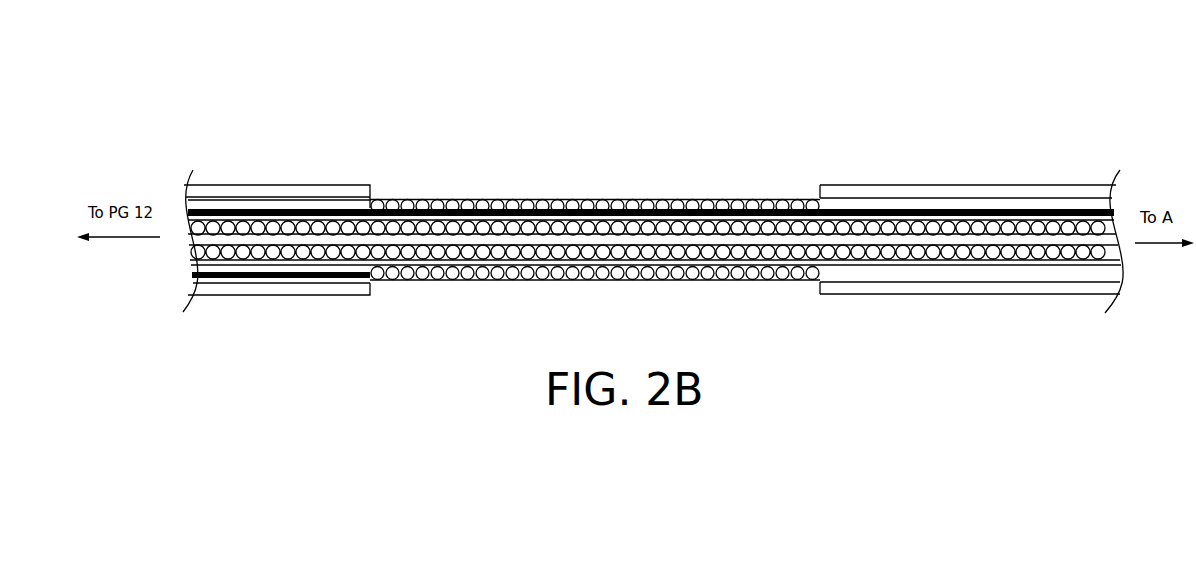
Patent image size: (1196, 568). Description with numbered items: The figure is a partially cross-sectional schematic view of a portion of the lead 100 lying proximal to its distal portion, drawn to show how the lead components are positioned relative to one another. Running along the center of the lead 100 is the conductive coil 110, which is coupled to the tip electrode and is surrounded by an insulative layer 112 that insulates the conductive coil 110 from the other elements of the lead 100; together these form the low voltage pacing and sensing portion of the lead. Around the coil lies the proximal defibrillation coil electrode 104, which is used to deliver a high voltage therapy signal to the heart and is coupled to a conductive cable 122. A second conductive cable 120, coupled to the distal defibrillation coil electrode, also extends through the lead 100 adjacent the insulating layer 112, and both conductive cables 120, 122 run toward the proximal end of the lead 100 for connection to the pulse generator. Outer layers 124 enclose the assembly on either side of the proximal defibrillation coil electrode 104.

The lead 100 is at (1002, 88).
The proximal defibrillation coil electrode 104 is at (563, 199).
The conductive coil 110 is at (733, 199).
The insulative layer 112 is at (820, 209).
The conductive cable 120 is at (345, 208).
The conductive cable 122 is at (302, 278).
The outer jacket 124 is at (225, 192).